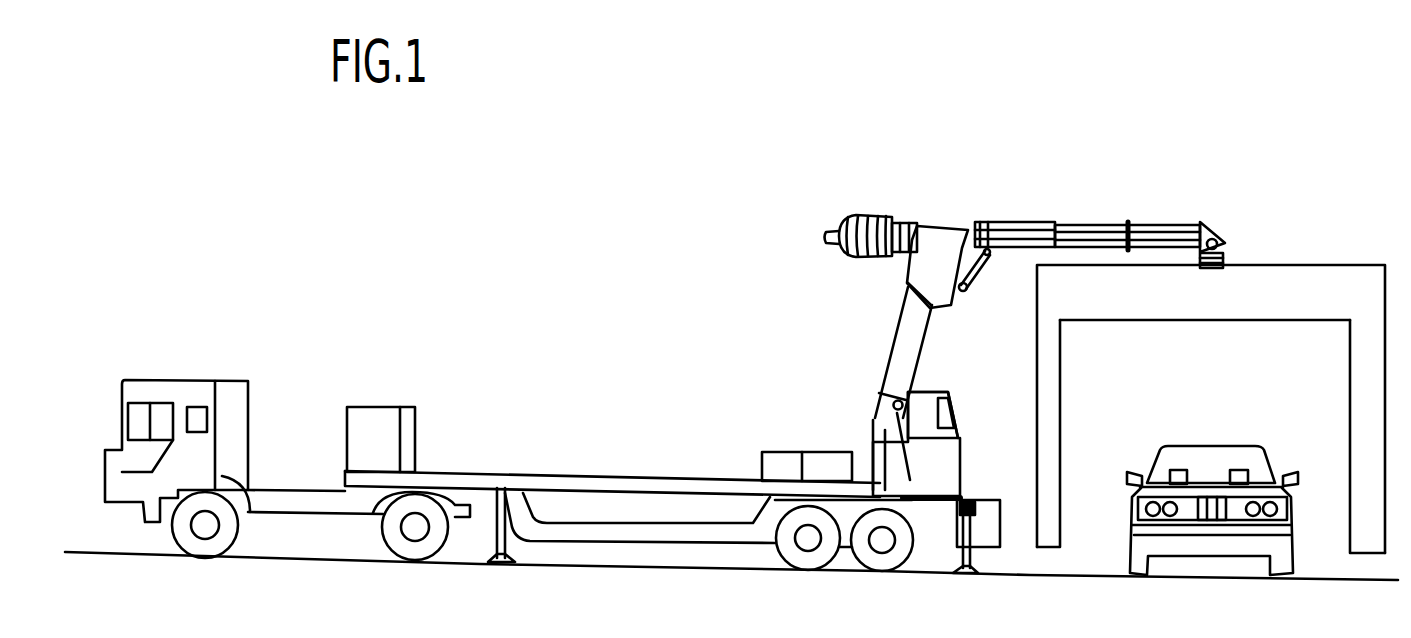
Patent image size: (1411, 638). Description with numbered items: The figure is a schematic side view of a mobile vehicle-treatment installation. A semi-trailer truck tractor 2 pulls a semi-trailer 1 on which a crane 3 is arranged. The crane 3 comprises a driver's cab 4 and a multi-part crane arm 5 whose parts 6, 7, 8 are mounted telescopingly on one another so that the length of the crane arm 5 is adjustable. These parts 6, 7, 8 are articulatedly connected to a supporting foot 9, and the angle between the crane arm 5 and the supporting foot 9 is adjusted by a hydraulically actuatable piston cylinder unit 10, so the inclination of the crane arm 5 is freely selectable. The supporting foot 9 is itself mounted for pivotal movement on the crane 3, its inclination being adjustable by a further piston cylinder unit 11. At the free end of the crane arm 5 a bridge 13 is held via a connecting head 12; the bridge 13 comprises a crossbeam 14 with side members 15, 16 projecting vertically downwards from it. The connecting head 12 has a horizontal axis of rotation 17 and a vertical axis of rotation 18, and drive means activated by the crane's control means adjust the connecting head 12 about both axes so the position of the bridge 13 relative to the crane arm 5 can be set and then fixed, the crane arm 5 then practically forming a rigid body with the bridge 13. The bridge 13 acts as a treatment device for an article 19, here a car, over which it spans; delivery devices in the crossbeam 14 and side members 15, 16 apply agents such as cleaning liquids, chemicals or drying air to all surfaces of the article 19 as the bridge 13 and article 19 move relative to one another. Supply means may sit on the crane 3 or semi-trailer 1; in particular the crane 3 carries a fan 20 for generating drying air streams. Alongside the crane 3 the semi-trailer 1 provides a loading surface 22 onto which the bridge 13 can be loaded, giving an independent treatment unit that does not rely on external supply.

The semi-trailer 1 is at (607, 490).
The semi-trailer truck tractor 2 is at (168, 388).
The crane 3 is at (946, 364).
The driver's cab 4 is at (960, 433).
The crane arm 5 is at (1062, 210).
The crane arm part 6 is at (1165, 222).
The crane arm part 7 is at (1113, 222).
The crane arm part 8 is at (993, 220).
The supporting foot 9 is at (902, 328).
The piston cylinder unit 10 is at (967, 287).
The further piston cylinder unit 11 is at (875, 418).
The connecting head 12 is at (1236, 238).
The bridge 13 is at (1325, 252).
The crossbeam 14 is at (1237, 312).
The side member 15 is at (1058, 412).
The side member 16 is at (1360, 407).
The horizontal axis of rotation 17 is at (1218, 238).
The vertical axis of rotation 18 is at (1215, 271).
The article 19 is at (1202, 447).
The fan 20 is at (871, 218).
The loading surface 22 is at (485, 472).